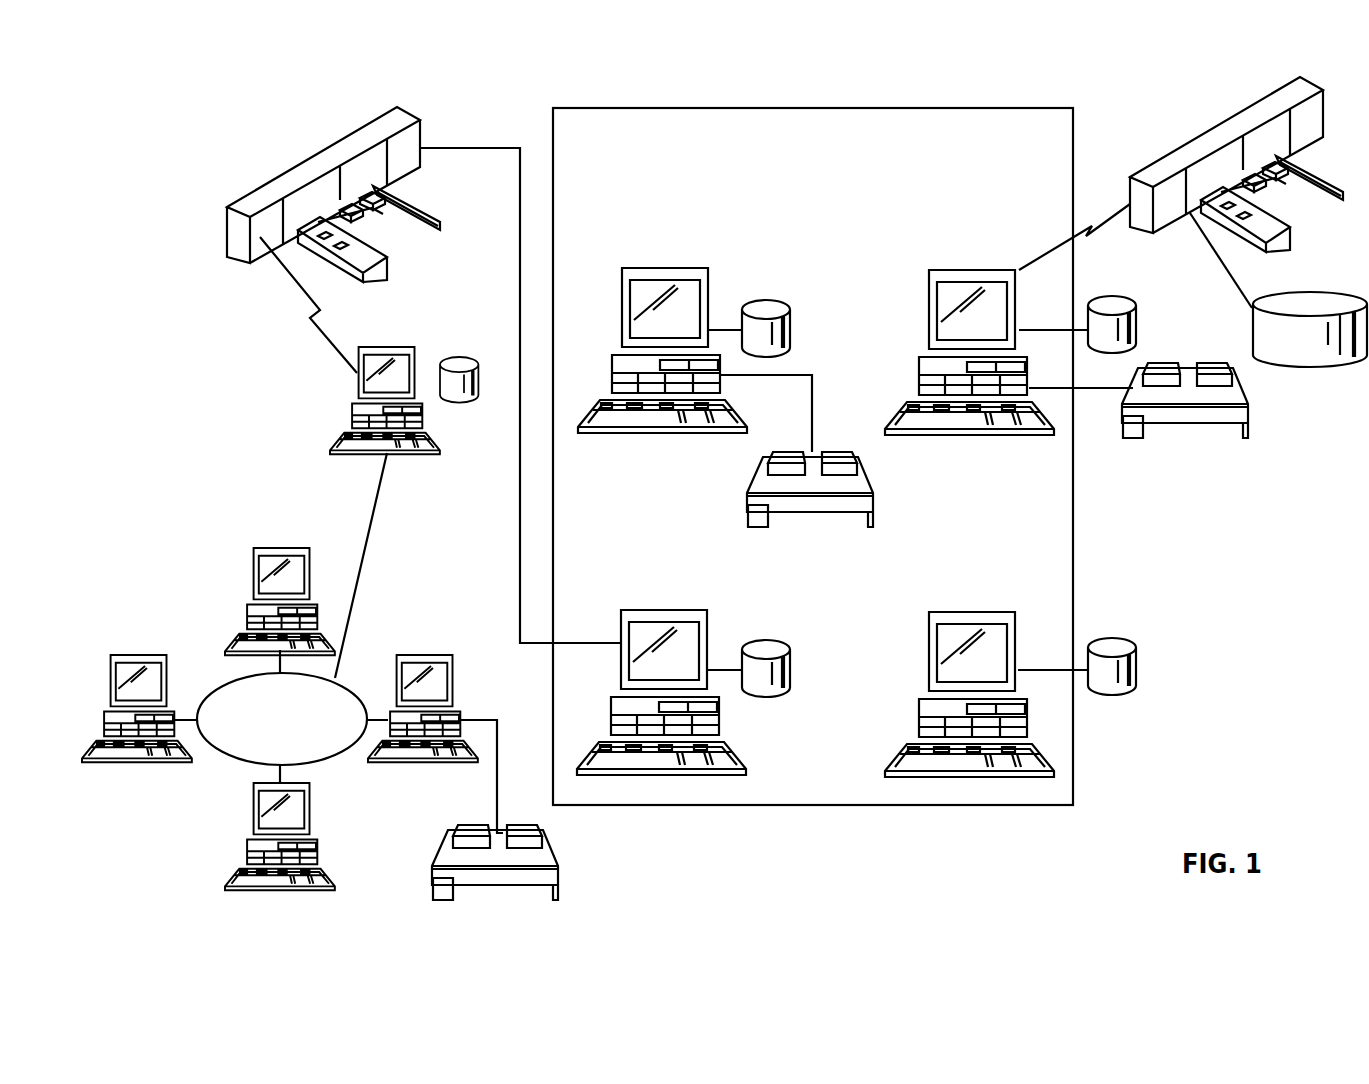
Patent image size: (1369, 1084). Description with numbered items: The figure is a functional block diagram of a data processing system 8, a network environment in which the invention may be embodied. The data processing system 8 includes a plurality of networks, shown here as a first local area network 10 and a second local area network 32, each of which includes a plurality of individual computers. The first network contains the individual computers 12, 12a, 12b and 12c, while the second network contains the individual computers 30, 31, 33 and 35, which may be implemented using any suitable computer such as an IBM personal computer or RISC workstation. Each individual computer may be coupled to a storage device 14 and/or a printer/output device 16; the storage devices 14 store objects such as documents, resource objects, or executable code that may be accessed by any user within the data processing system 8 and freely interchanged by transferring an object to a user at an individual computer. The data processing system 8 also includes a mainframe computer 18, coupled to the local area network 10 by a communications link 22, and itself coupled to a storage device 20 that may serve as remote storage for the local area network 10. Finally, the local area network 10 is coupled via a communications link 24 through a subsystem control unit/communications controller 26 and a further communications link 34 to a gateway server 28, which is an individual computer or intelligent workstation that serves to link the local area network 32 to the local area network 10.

The data processing system 8 is at (540, 110).
The local area network 10 is at (696, 180).
The individual computer 12 is at (948, 270).
The individual computer 12a is at (640, 270).
The individual computer 12b is at (640, 610).
The individual computer 12c is at (948, 612).
The storage device 14 is at (790, 330).
The printer/output device 16 is at (860, 483).
The mainframe computer 18 is at (1147, 173).
The storage device 20 is at (1306, 348).
The communications link 22 is at (1105, 203).
The communications link 24 is at (520, 287).
The subsystem control unit/communications controller 26 is at (298, 170).
The gateway server 28 is at (402, 347).
The individual computer 30 is at (430, 655).
The individual computer 31 is at (310, 802).
The local area network 32 is at (236, 760).
The individual computer 33 is at (132, 655).
The communications link 34 is at (327, 342).
The individual computer 35 is at (250, 573).